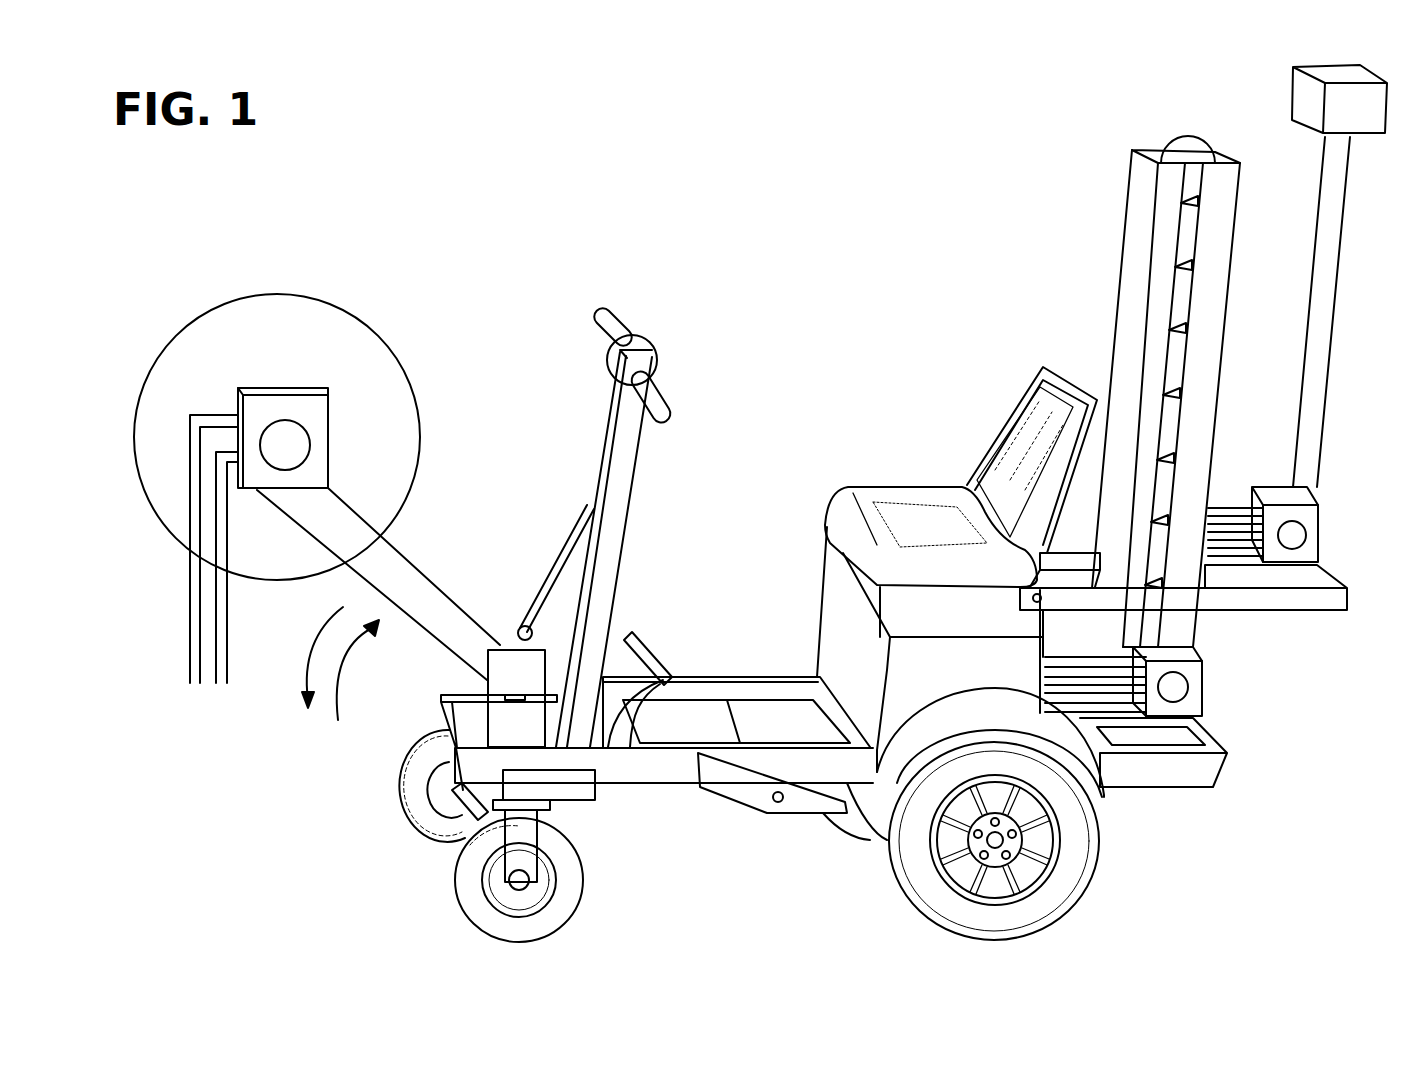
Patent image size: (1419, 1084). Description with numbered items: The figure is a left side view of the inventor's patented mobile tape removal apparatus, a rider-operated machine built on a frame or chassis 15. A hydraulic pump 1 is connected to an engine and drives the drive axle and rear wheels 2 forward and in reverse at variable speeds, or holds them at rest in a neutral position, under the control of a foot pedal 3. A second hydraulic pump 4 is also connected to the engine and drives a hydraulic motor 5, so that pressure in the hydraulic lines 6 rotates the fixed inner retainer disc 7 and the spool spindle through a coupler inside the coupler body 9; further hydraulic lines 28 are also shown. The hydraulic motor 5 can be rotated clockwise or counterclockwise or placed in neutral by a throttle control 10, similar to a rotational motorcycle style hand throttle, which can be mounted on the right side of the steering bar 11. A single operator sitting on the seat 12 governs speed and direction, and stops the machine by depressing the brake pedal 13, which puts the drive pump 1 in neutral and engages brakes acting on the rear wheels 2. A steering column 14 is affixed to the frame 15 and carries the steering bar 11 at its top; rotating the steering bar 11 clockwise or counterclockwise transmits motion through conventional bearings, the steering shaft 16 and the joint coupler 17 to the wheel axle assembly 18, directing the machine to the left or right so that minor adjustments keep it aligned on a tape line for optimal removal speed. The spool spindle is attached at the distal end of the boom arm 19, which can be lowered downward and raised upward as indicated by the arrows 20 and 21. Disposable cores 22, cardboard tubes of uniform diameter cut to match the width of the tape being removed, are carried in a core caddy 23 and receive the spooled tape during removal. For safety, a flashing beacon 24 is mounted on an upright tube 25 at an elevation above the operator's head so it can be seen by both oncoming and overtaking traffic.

The hydraulic pump 1 is at (1188, 687).
The rear wheels 2 is at (1003, 840).
The foot pedal 3 is at (812, 803).
The hydraulic pump 4 is at (1306, 535).
The hydraulic motor 5 is at (287, 437).
The hydraulic lines 6 is at (222, 658).
The fixed inner retainer disc 7 is at (317, 320).
The coupler body 9 is at (263, 417).
The throttle control 10 is at (637, 337).
The steering bar 11 is at (660, 390).
The seat 12 is at (1023, 427).
The brake pedal 13 is at (660, 708).
The steering column 14 is at (615, 553).
The frame 15 is at (648, 773).
The steering shaft 16 is at (563, 557).
The joint coupler 17 is at (505, 635).
The wheel axle assembly 18 is at (518, 882).
The boom arm 19 is at (400, 555).
The arrow 20 is at (342, 670).
The arrow 21 is at (308, 653).
The disposable cores 22 is at (1188, 147).
The core caddy 23 is at (1127, 232).
The flashing beacon 24 is at (1305, 97).
The upright tube 25 is at (1332, 165).
The hydraulic lines 28 is at (1102, 662).